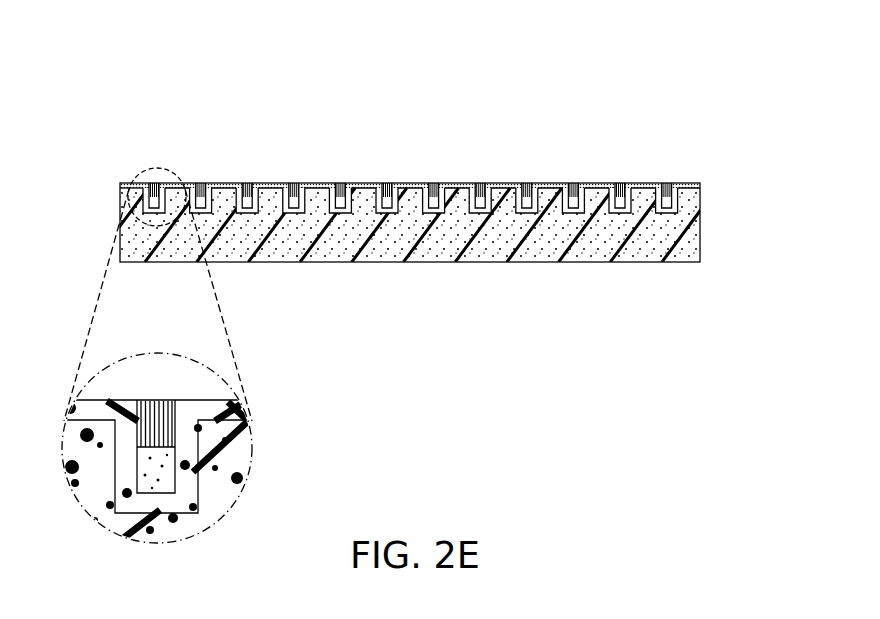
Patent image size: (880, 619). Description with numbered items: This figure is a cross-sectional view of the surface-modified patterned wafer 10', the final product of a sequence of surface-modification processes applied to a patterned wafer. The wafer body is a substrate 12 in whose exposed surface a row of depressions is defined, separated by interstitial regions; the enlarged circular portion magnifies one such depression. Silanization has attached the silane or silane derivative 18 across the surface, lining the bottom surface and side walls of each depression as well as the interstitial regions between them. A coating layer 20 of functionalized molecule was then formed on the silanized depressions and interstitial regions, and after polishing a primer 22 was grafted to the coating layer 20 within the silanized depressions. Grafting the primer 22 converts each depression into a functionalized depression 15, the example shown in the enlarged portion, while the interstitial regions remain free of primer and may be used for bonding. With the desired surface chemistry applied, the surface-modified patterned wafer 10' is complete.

The surface-modified patterned wafer 10' is at (412, 286).
The substrate 12 is at (639, 263).
The functionalized depression 15 is at (156, 160).
The silane or silane derivative 18 is at (690, 184).
The coating layer 20 is at (573, 218).
The primer 22 is at (572, 186).